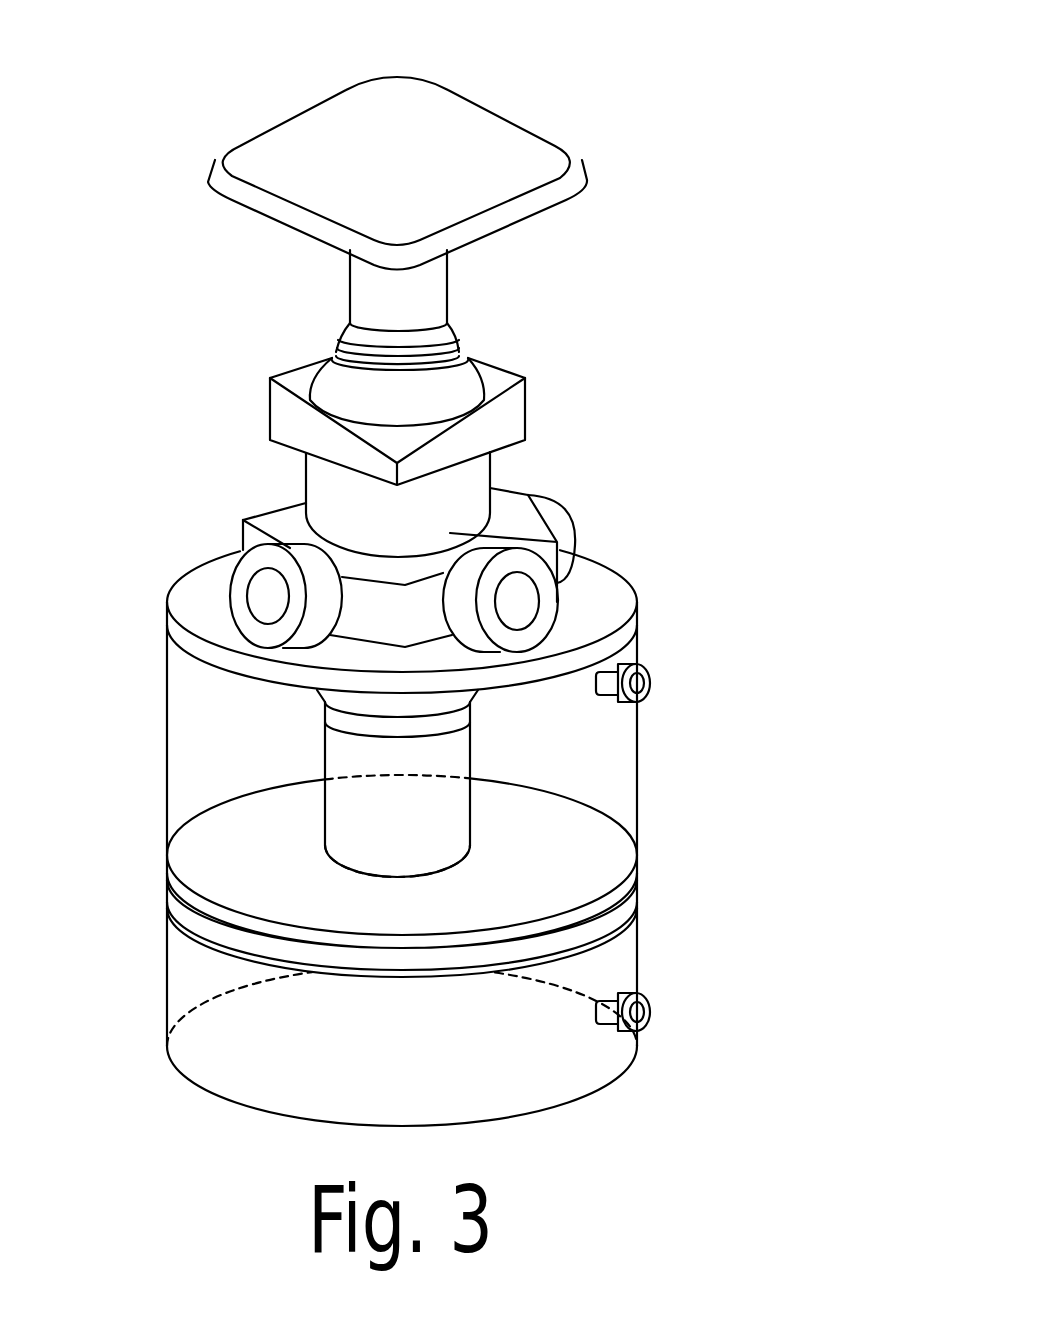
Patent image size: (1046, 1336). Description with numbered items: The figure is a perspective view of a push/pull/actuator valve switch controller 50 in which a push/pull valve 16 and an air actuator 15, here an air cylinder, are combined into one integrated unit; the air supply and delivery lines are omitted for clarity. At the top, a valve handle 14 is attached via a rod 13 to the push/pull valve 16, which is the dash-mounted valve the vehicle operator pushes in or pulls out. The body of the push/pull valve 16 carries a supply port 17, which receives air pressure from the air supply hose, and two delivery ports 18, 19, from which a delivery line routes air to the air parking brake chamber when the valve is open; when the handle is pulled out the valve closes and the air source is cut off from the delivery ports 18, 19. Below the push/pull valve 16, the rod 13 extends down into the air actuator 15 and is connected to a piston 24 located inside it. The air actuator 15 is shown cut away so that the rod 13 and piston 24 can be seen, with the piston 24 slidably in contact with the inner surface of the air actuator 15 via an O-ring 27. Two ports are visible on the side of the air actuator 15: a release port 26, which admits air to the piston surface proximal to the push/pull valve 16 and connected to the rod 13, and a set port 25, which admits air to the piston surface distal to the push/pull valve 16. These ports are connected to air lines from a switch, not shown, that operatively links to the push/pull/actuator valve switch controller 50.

The rod 13 is at (427, 295).
The valve handle 14 is at (469, 143).
The air actuator 15 is at (167, 795).
The push/pull valve 16 is at (245, 443).
The supply port 17 is at (515, 602).
The delivery port 18 is at (265, 593).
The delivery port 19 is at (556, 522).
The piston 24 is at (190, 935).
The set port 25 is at (650, 1012).
The release port 26 is at (650, 683).
The O-ring 27 is at (607, 913).
The push/pull/actuator valve switch controller 50 is at (788, 583).